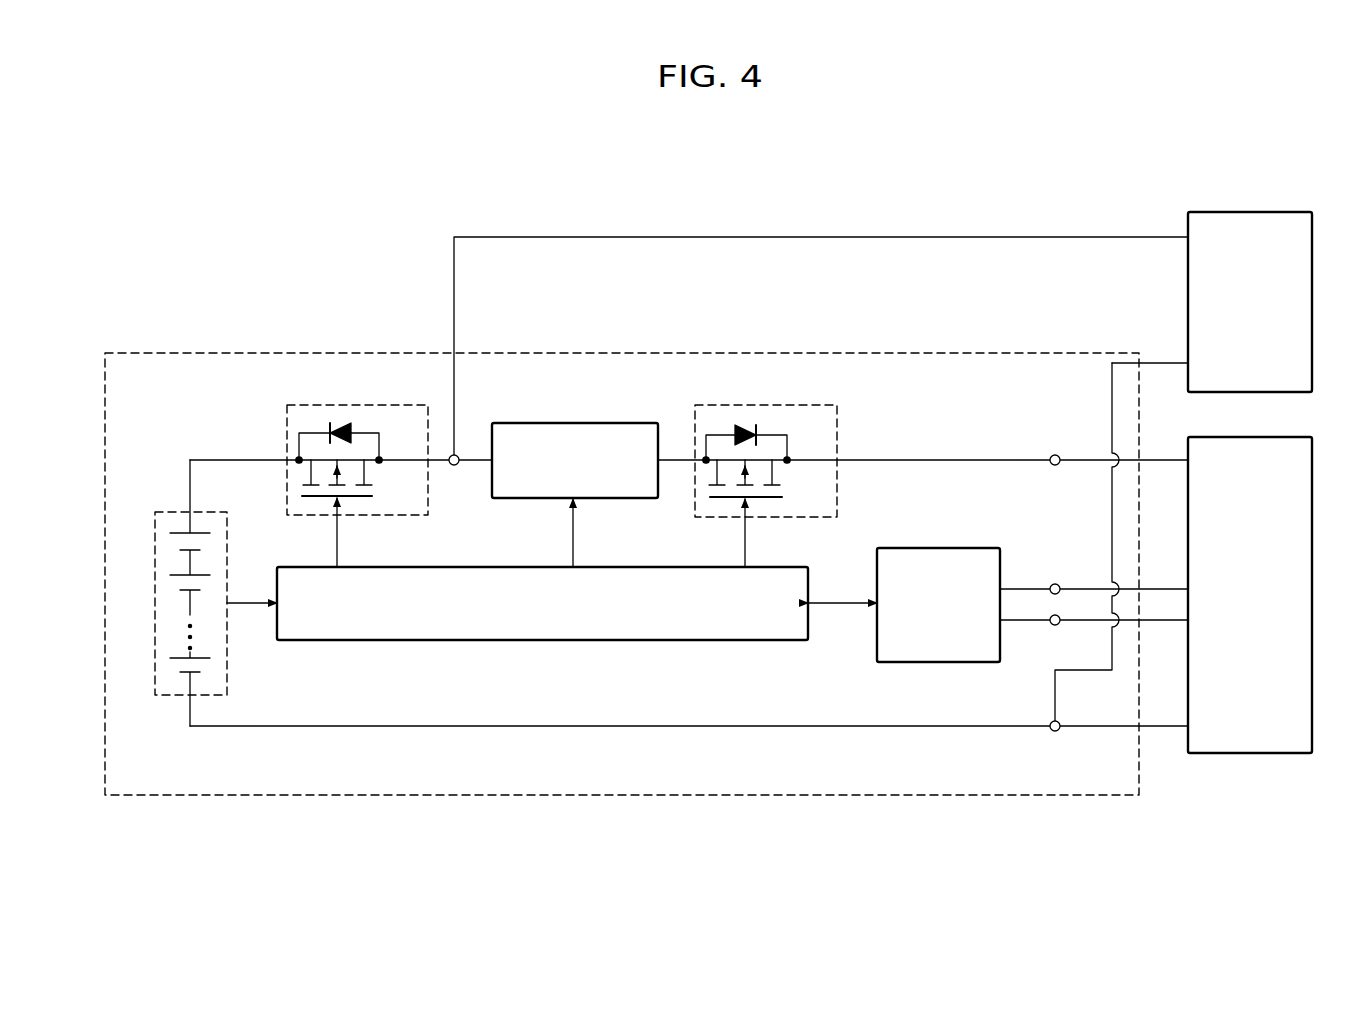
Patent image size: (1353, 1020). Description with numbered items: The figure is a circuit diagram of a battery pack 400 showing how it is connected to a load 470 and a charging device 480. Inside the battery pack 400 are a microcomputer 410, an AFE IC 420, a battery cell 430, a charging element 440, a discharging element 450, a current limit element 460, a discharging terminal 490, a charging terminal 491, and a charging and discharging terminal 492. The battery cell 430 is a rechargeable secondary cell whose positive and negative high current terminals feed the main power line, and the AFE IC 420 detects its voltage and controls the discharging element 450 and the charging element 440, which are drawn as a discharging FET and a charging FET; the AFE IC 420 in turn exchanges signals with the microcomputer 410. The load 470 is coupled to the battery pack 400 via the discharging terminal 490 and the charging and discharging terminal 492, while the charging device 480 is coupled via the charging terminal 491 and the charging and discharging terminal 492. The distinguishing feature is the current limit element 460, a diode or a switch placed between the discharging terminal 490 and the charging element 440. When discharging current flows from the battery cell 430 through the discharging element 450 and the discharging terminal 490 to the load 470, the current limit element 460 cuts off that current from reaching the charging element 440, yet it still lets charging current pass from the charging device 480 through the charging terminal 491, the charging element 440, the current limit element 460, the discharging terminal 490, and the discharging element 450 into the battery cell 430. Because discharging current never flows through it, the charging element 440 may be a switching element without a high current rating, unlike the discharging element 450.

The battery pack 400 is at (752, 353).
The microcomputer 410 is at (950, 548).
The AFE IC 420 is at (600, 567).
The battery cell 430 is at (168, 512).
The charging element 440 is at (767, 405).
The discharging element 450 is at (357, 405).
The current limit element 460 is at (600, 423).
The load 470 is at (1253, 212).
The charging device 480 is at (1253, 437).
The discharging terminal 490 is at (454, 465).
The charging terminal 491 is at (1055, 465).
The charging and discharging terminal 492 is at (1055, 731).